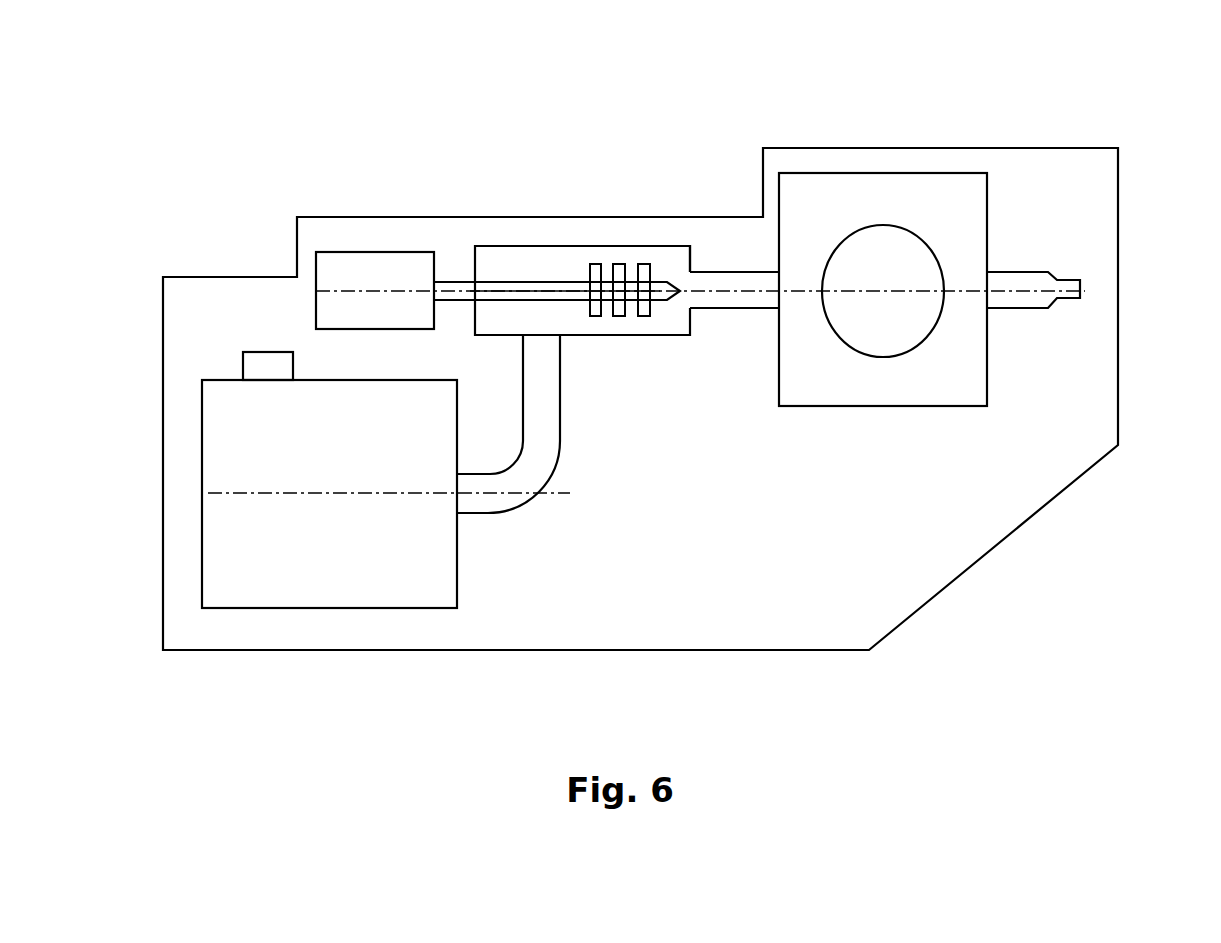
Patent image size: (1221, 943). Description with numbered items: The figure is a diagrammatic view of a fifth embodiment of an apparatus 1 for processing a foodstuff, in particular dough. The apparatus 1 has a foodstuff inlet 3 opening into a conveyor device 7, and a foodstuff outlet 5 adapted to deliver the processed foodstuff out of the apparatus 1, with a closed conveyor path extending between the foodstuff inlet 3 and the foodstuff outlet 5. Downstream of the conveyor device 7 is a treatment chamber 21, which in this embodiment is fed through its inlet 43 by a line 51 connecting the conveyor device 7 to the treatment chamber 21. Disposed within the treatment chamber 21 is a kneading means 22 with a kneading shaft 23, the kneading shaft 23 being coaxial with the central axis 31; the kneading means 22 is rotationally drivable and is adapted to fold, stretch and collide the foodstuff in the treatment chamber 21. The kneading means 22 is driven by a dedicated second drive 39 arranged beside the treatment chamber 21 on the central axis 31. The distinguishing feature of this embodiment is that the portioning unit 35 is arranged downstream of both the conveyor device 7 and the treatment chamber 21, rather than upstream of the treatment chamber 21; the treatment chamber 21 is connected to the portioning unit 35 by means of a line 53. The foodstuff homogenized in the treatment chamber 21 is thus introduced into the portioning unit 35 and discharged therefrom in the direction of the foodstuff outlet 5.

The apparatus 1 is at (212, 165).
The foodstuff inlet 3 is at (249, 337).
The foodstuff outlet 5 is at (1100, 304).
The conveyor device 7 is at (393, 624).
The treatment chamber 21 is at (668, 254).
The kneading means 22 is at (620, 248).
The kneading shaft 23 is at (505, 282).
The central axis 31 is at (547, 290).
The portioning unit 35 is at (891, 148).
The second drive 39 is at (383, 262).
The inlet of the treatment chamber 43 is at (576, 347).
The line 51 is at (540, 466).
The line 53 is at (703, 328).